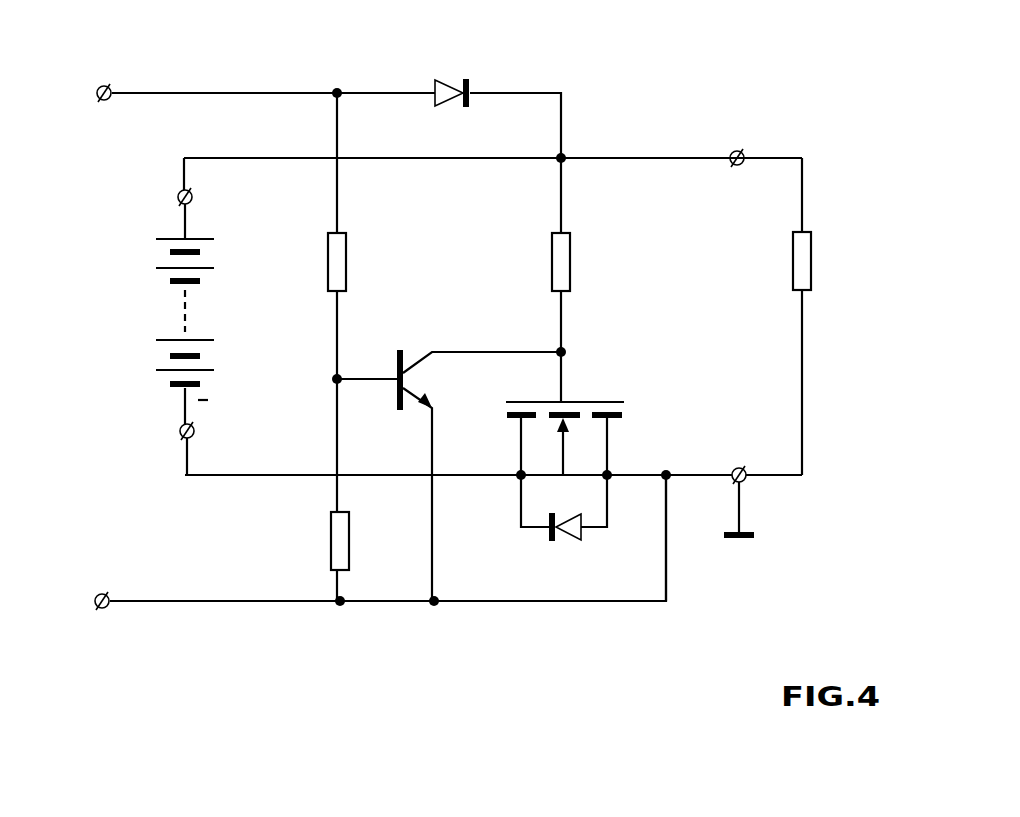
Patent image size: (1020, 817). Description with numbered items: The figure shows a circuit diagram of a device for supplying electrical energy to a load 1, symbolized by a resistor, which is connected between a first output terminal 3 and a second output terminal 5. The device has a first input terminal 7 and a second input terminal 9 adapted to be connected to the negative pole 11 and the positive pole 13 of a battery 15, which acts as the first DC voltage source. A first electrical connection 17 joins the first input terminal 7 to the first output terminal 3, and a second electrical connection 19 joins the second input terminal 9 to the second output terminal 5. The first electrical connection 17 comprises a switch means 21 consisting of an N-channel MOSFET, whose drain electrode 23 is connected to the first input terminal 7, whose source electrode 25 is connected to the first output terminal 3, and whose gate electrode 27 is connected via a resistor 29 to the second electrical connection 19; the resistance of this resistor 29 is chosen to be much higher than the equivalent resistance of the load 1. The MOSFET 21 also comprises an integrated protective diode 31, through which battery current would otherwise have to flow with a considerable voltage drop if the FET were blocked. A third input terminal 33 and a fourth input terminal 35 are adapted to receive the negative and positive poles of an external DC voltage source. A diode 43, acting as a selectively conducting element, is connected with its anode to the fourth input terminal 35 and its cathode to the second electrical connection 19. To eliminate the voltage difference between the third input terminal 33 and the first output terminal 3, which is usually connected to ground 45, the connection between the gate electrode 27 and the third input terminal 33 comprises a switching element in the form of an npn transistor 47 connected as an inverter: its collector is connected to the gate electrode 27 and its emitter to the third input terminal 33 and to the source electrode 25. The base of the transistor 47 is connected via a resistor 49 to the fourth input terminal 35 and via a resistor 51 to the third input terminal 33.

The load 1 is at (811, 258).
The first output terminal 3 is at (740, 467).
The second output terminal 5 is at (738, 150).
The first input terminal 7 is at (181, 436).
The second input terminal 9 is at (193, 198).
The negative pole 11 is at (174, 387).
The positive pole 13 is at (152, 241).
The battery 15 is at (200, 312).
The first electrical connection 17 is at (702, 478).
The second electrical connection 19 is at (630, 157).
The switch means 21 is at (567, 383).
The drain electrode 23 is at (508, 420).
The source electrode 25 is at (626, 414).
The gate electrode 27 is at (606, 398).
The resistor 29 is at (552, 260).
The protective diode 31 is at (551, 542).
The third input terminal 33 is at (102, 609).
The fourth input terminal 35 is at (100, 86).
The diode 43 is at (454, 79).
The ground 45 is at (756, 534).
The npn transistor 47 is at (414, 335).
The resistor 49 is at (328, 260).
The resistor 51 is at (331, 538).